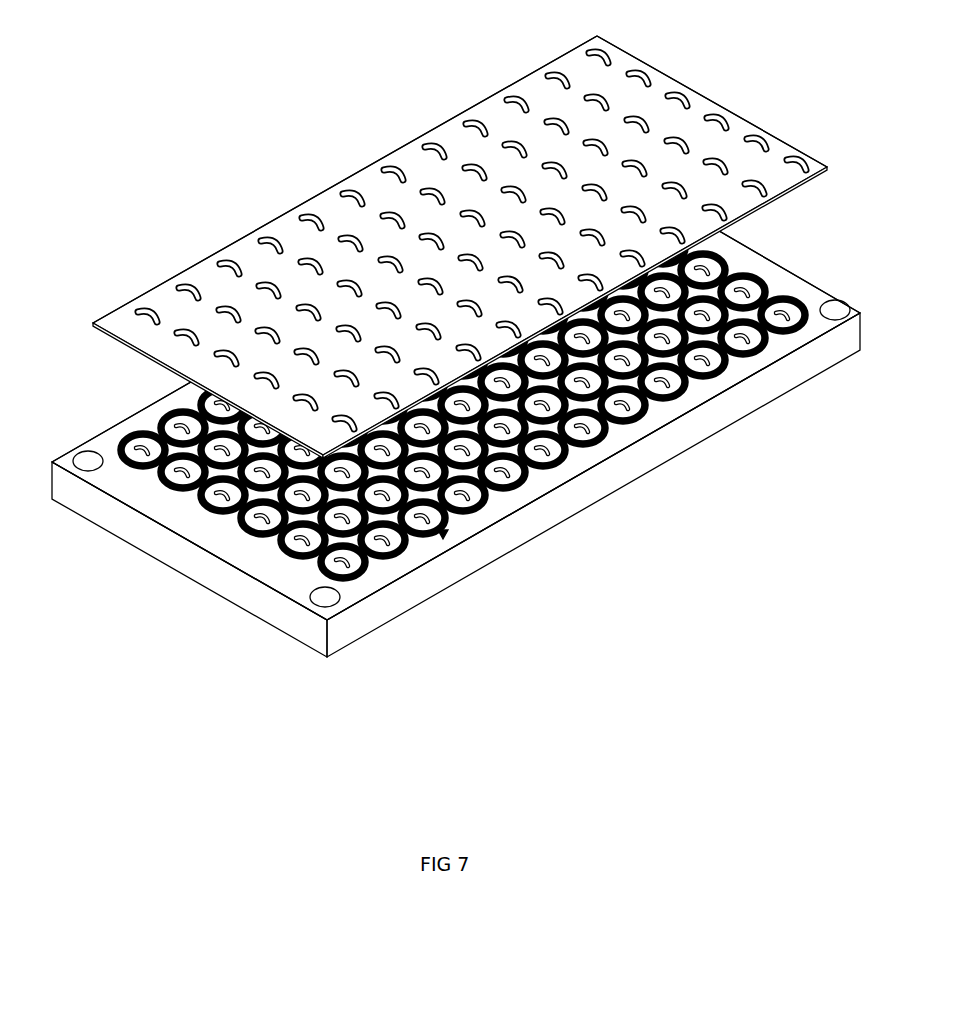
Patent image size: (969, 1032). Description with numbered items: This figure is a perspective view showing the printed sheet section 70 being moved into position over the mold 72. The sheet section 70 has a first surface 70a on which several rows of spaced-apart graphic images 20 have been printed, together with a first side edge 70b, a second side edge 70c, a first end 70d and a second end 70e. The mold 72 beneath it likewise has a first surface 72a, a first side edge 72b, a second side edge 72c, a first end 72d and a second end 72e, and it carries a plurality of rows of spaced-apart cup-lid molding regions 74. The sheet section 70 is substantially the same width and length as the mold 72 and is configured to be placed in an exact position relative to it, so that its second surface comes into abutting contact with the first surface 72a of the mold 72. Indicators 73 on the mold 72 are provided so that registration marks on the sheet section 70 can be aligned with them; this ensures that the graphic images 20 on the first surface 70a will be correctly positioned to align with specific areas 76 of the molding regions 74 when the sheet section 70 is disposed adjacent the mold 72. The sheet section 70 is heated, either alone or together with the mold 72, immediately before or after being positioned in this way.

The sheet section 70 is at (460, 236).
The first surface 70a is at (529, 76).
The first side edge 70b is at (427, 131).
The second side edge 70c is at (779, 196).
The first end 70d is at (603, 44).
The second end 70e is at (140, 350).
The graphic images 20 is at (753, 140).
The mold 72 is at (452, 415).
The first surface 72a is at (258, 563).
The first side edge 72b is at (107, 428).
The second side edge 72c is at (508, 529).
The first end 72d is at (784, 265).
The second end 72e is at (165, 547).
The indicators 73 is at (128, 487).
The cup-lid molding regions 74 is at (443, 536).
The specific areas 76 is at (810, 313).